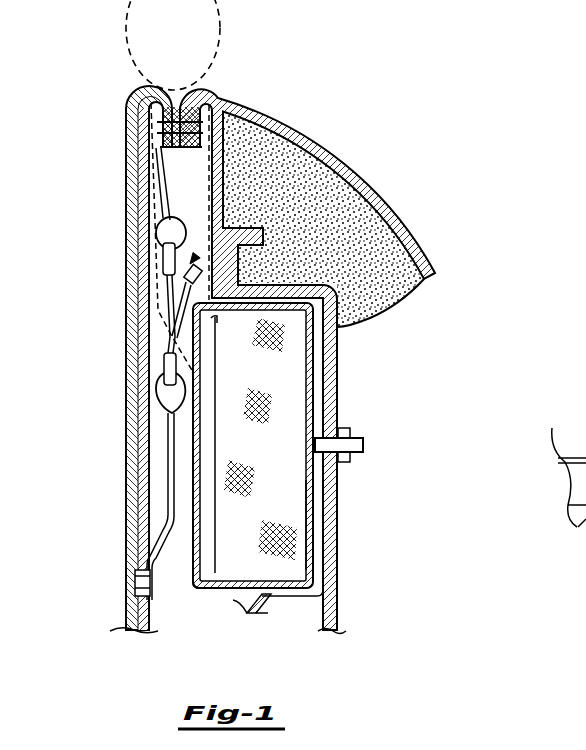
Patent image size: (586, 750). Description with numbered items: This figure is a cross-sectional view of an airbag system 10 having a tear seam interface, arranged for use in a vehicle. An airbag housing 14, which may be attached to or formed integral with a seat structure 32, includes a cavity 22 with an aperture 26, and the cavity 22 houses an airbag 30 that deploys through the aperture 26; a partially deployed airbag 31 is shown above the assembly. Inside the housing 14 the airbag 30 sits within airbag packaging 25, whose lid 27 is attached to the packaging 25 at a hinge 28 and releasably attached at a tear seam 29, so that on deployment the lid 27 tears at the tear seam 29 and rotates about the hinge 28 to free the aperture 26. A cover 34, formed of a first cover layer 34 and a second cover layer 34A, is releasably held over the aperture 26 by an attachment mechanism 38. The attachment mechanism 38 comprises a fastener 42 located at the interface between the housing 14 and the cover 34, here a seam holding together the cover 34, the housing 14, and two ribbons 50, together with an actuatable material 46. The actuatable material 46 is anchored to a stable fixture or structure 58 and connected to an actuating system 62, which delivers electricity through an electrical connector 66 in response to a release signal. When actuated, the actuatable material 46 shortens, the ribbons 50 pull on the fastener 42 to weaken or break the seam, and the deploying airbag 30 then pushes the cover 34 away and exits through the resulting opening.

The airbag system 10 is at (405, 186).
The airbag housing 14 is at (285, 598).
The cavity 22 is at (300, 553).
The airbag packaging 25 is at (215, 593).
The aperture 26 is at (206, 338).
The lid 27 is at (200, 447).
The hinge 28 is at (197, 589).
The tear seam 29 is at (213, 320).
The airbag 30 is at (290, 363).
The partially deployed airbag 31 is at (128, 30).
The seat structure 32 is at (338, 480).
The cover 34 is at (128, 148).
The second cover layer 34A is at (142, 182).
The attachment mechanism 38 is at (158, 310).
The fastener 42 is at (182, 108).
The actuatable material 46 is at (166, 333).
The ribbons 50 is at (160, 216).
The fixture or structure 58 is at (137, 585).
The actuating system 62 is at (162, 282).
The electrical connector 66 is at (197, 252).